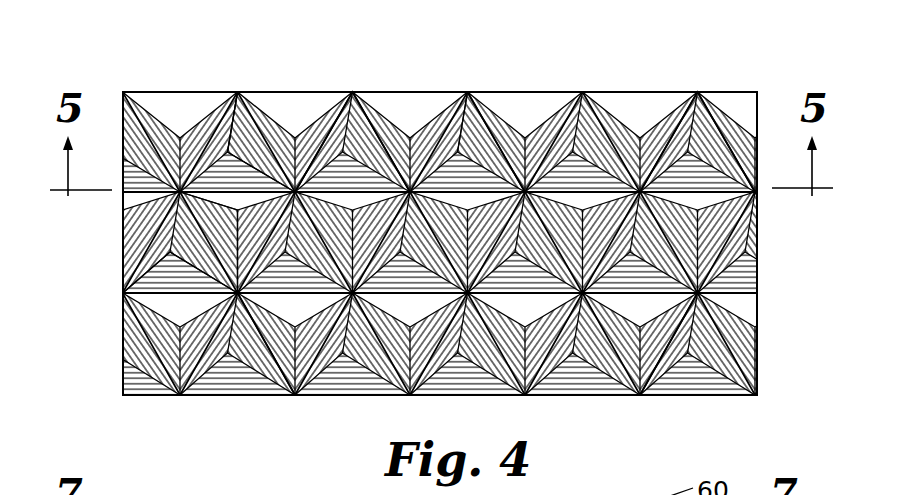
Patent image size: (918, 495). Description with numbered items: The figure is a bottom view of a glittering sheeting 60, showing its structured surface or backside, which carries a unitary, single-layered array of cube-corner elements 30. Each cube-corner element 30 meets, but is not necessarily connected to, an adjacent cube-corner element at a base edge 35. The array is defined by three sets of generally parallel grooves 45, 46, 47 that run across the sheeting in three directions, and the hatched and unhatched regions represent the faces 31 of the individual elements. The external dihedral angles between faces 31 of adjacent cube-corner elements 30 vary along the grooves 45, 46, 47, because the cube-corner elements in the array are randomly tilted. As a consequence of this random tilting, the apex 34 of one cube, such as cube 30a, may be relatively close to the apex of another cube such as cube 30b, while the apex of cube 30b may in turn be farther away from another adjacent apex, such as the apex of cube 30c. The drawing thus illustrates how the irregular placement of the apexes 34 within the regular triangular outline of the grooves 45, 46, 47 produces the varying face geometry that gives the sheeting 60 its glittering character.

The glittering sheeting 60 is at (628, 44).
The cube-corner elements 30 is at (382, 89).
The cube 30a is at (160, 265).
The cube 30b is at (225, 240).
The cube 30c is at (258, 130).
The faces 31 is at (650, 136).
The apex 34 is at (182, 138).
The base edge 35 is at (497, 137).
The grooves 45 is at (730, 272).
The grooves 46 is at (730, 343).
The grooves 47 is at (300, 355).